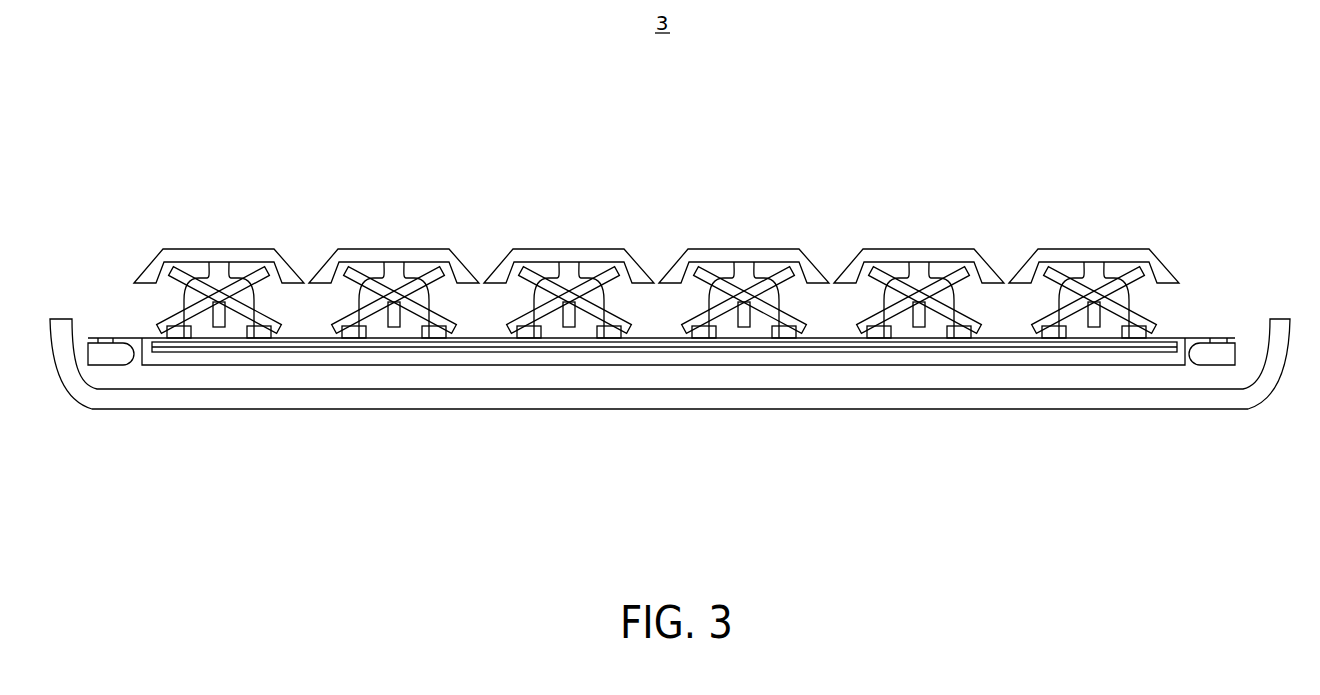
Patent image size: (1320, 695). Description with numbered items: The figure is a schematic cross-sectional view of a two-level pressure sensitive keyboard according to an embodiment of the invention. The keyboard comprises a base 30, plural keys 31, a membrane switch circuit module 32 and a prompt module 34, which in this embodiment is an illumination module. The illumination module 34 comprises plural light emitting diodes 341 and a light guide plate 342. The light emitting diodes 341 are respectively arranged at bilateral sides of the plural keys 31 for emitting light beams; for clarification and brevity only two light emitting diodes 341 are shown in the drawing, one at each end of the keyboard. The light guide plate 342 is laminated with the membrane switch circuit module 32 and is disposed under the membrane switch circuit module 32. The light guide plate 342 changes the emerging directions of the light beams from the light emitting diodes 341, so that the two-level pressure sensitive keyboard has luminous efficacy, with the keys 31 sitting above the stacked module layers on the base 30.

The base 30 is at (1028, 398).
The keys 31 is at (656, 248).
The membrane switch circuit module 32 is at (839, 357).
The prompt module 34 is at (1185, 387).
The light emitting diodes 341 is at (108, 357).
The light guide plate 342 is at (1082, 360).